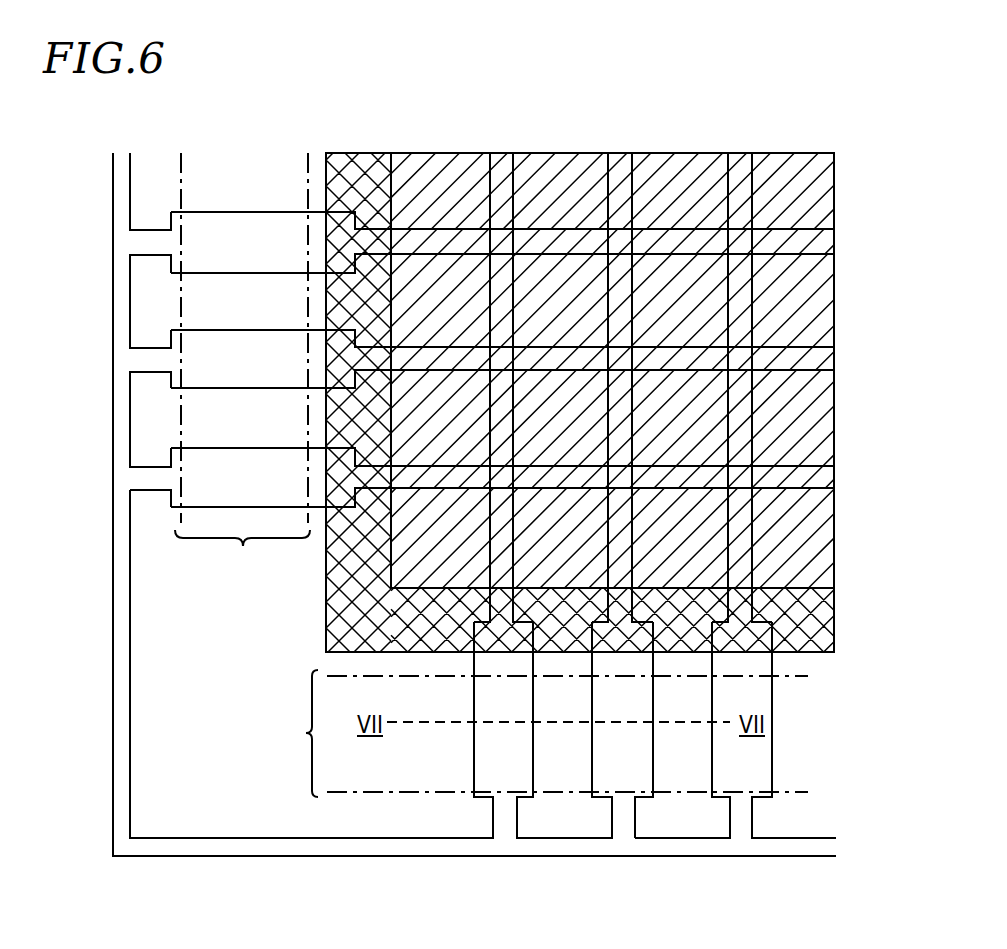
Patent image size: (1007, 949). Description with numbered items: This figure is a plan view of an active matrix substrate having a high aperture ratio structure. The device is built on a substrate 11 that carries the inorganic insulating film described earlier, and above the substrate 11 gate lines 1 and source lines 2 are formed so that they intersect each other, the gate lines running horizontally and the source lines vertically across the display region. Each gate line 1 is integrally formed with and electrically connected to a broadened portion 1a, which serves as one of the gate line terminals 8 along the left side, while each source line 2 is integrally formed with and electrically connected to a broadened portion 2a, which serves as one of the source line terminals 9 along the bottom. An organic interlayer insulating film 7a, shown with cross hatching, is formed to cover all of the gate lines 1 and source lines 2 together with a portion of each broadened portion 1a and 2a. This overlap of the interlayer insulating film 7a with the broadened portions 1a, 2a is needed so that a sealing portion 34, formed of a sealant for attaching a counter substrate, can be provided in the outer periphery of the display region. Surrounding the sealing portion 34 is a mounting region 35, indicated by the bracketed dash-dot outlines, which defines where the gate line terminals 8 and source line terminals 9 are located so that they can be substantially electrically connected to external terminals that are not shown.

The gate lines 1 is at (665, 220).
The broadened portions for gate line terminals 1a is at (197, 246).
The source lines 2 is at (755, 190).
The broadened portions for source line terminals 2a is at (633, 775).
The organic interlayer insulating film 7a is at (418, 152).
The gate line terminals 8 is at (235, 223).
The source line terminals 9 is at (748, 778).
The substrate 11 is at (225, 823).
The sealing portion 34 is at (818, 615).
The mounting region 35 is at (491, 475).